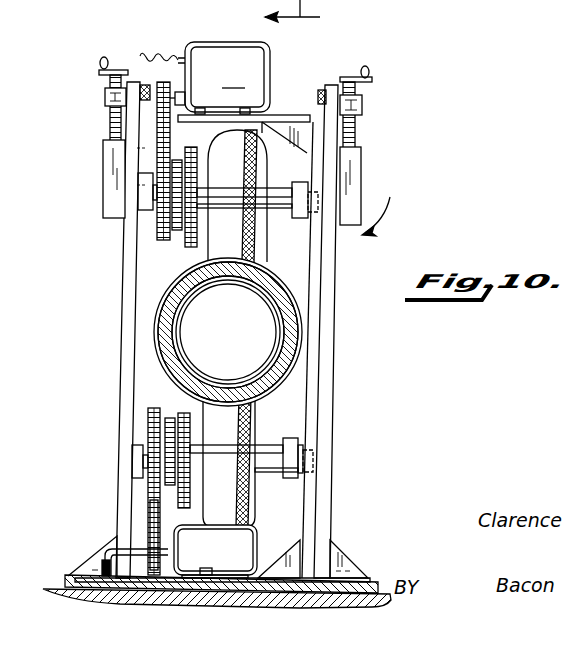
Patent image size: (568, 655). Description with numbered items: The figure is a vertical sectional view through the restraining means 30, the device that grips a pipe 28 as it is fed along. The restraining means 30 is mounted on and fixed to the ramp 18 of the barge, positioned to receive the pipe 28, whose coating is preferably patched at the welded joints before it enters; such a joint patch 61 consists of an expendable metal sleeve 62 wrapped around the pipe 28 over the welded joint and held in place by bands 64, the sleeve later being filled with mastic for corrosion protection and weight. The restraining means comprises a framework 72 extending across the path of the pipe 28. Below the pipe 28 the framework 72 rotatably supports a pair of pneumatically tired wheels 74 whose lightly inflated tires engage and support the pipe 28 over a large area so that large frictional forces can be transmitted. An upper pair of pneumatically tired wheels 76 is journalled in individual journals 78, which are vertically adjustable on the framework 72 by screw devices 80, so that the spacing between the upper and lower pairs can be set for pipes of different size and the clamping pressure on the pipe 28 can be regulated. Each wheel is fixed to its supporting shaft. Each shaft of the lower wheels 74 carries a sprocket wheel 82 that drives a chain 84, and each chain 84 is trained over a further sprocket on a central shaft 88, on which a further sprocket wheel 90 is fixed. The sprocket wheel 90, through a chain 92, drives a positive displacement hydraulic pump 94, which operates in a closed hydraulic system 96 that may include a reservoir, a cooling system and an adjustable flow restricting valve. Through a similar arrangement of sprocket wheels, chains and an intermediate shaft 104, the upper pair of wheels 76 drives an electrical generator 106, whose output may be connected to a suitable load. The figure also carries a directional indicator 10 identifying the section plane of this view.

The machine assembly 10 is at (315, 17).
The ramp 18 is at (55, 590).
The pipe 28 is at (182, 290).
The restraining means 30 is at (385, 204).
The joint patch 61 is at (155, 328).
The expendable metal sleeve 62 is at (158, 352).
The bands 64 is at (160, 307).
The framework 72 is at (128, 263).
The pneumatically tired wheels 74 is at (254, 427).
The upper pneumatically tired wheels 76 is at (260, 168).
The journals 78 is at (115, 173).
The screw devices 80 is at (112, 78).
The sprocket wheel 82 is at (184, 414).
The chain 84 is at (170, 420).
The central shaft 88 is at (218, 455).
The sprocket wheel 90 is at (150, 425).
The chain 92 is at (150, 510).
The positive displacement hydraulic pump 94 is at (255, 538).
The closed hydraulic system 96 is at (135, 548).
The intermediate shaft 104 is at (279, 199).
The electrical generator 106 is at (215, 52).